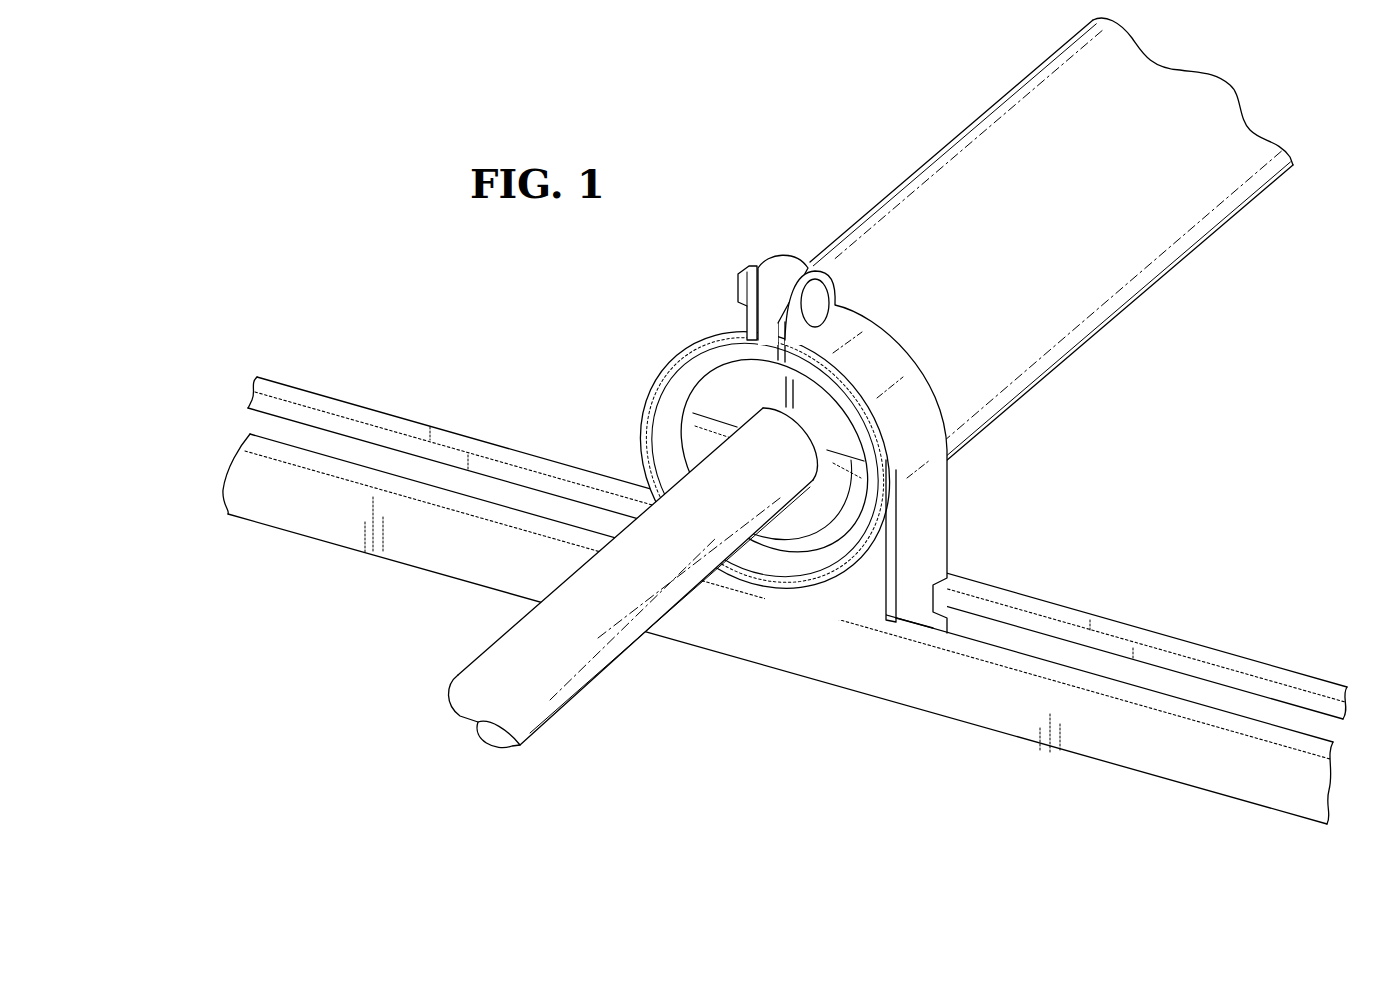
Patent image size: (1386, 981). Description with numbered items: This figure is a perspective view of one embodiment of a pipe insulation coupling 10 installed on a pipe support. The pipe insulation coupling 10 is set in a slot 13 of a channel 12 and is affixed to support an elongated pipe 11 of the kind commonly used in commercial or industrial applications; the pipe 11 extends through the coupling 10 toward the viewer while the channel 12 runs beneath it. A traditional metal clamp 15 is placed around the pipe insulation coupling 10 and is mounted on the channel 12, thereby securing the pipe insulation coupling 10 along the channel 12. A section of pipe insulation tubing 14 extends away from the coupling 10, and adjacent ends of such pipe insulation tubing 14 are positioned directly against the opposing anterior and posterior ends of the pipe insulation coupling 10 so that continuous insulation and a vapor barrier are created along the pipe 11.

The pipe insulation coupling 10 is at (710, 385).
The elongated pipe 11 is at (552, 683).
The channel 12 is at (927, 692).
The slot 13 is at (1087, 657).
The pipe insulation tubing 14 is at (1035, 292).
The metal clamp 15 is at (932, 493).